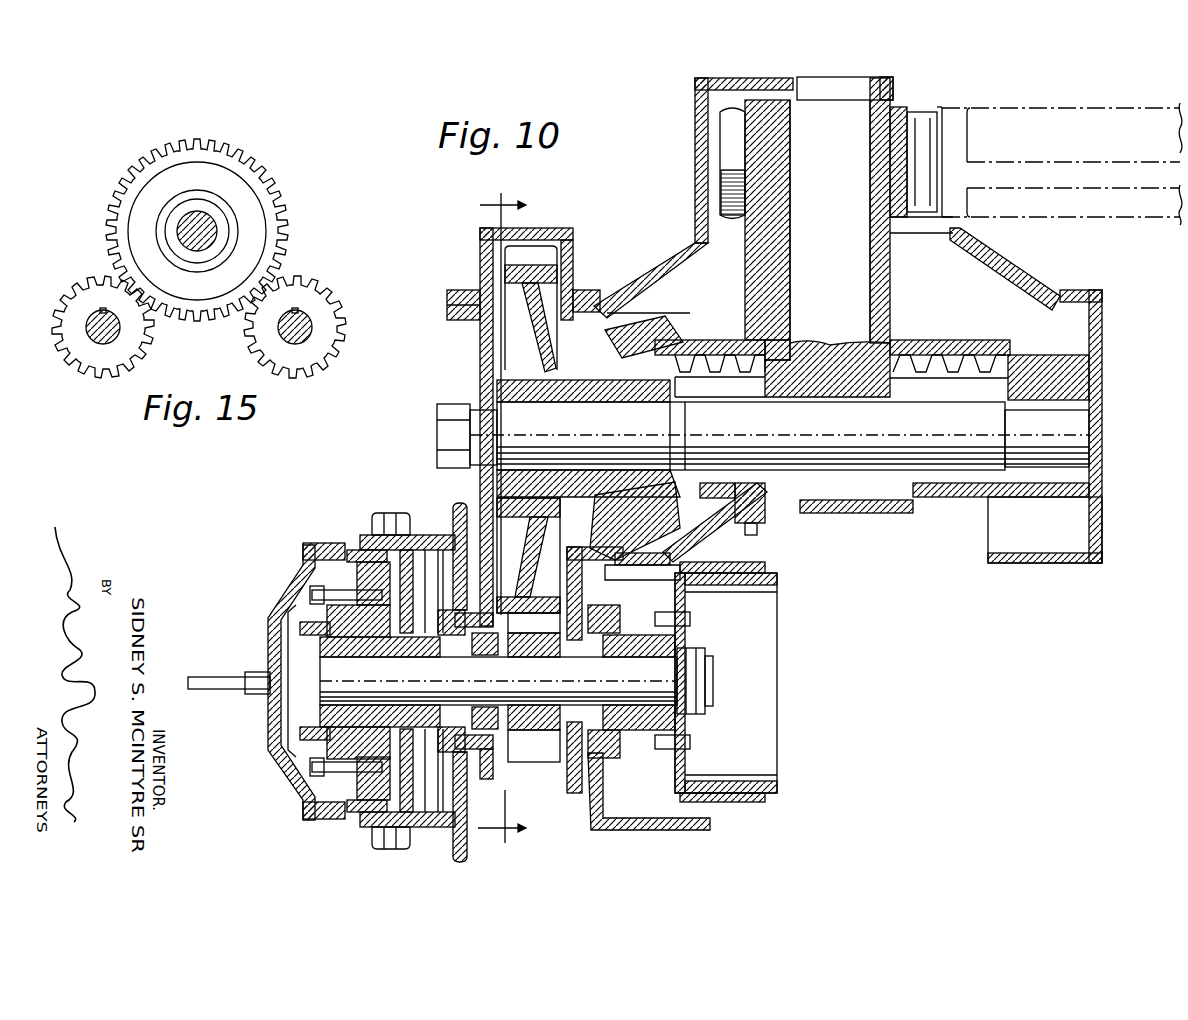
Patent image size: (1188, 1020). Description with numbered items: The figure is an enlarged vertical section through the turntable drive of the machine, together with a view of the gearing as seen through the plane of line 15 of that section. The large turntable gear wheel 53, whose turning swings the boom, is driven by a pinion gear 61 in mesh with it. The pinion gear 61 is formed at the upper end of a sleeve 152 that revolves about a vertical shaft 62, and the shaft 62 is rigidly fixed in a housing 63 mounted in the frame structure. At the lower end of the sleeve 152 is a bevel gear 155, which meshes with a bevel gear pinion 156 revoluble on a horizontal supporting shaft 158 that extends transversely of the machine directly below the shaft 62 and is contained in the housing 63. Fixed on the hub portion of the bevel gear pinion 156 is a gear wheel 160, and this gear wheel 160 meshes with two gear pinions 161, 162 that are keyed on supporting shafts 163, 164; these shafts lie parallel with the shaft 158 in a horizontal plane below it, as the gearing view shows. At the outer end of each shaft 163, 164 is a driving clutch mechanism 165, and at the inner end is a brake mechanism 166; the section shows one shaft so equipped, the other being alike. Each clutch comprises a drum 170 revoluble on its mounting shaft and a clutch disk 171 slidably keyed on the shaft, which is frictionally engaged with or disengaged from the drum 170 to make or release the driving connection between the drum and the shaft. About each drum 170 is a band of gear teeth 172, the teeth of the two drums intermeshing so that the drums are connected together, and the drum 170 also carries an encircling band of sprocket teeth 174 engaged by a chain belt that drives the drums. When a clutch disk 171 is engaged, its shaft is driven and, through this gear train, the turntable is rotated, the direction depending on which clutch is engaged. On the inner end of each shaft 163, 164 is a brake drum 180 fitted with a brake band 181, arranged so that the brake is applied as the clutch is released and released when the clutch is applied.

In FIG. 10, the line 15— 15 is at (502, 518).
In FIG. 10, the gear wheel 53 is at (1037, 110).
In FIG. 10, the pinion gear 61 is at (735, 140).
In FIG. 10, the vertical shaft 62 is at (800, 168).
In FIG. 10, the housing 63 is at (664, 264).
In FIG. 10, the sleeve 152 is at (770, 262).
In FIG. 10, the bevel gear 155 is at (686, 318).
In FIG. 10, the bevel gear pinion 156 is at (520, 365).
In FIG. 10, the supporting shaft 158 is at (520, 420).
In FIG. 15, the supporting shaft 158 is at (215, 230).
In FIG. 10, the gear wheel 160 is at (500, 262).
In FIG. 15, the gear wheel 160 is at (260, 178).
In FIG. 10, the gear pinion 161 is at (540, 722).
In FIG. 15, the gear pinion 161 is at (92, 297).
In FIG. 15, the gear pinion 162 is at (305, 292).
In FIG. 10, the supporting shaft 163 is at (478, 740).
In FIG. 15, the supporting shaft 163 is at (110, 344).
In FIG. 15, the supporting shaft 164 is at (300, 328).
In FIG. 10, the driving clutch mechanism 165 is at (297, 580).
In FIG. 10, the brake mechanism 166 is at (785, 635).
In FIG. 10, the drum 170 is at (420, 530).
In FIG. 10, the clutch disk 171 is at (338, 552).
In FIG. 10, the band of gear teeth 172 is at (372, 523).
In FIG. 10, the band of sprocket teeth 174 is at (445, 508).
In FIG. 10, the brake drum 180 is at (777, 578).
In FIG. 10, the brake band 181 is at (735, 800).